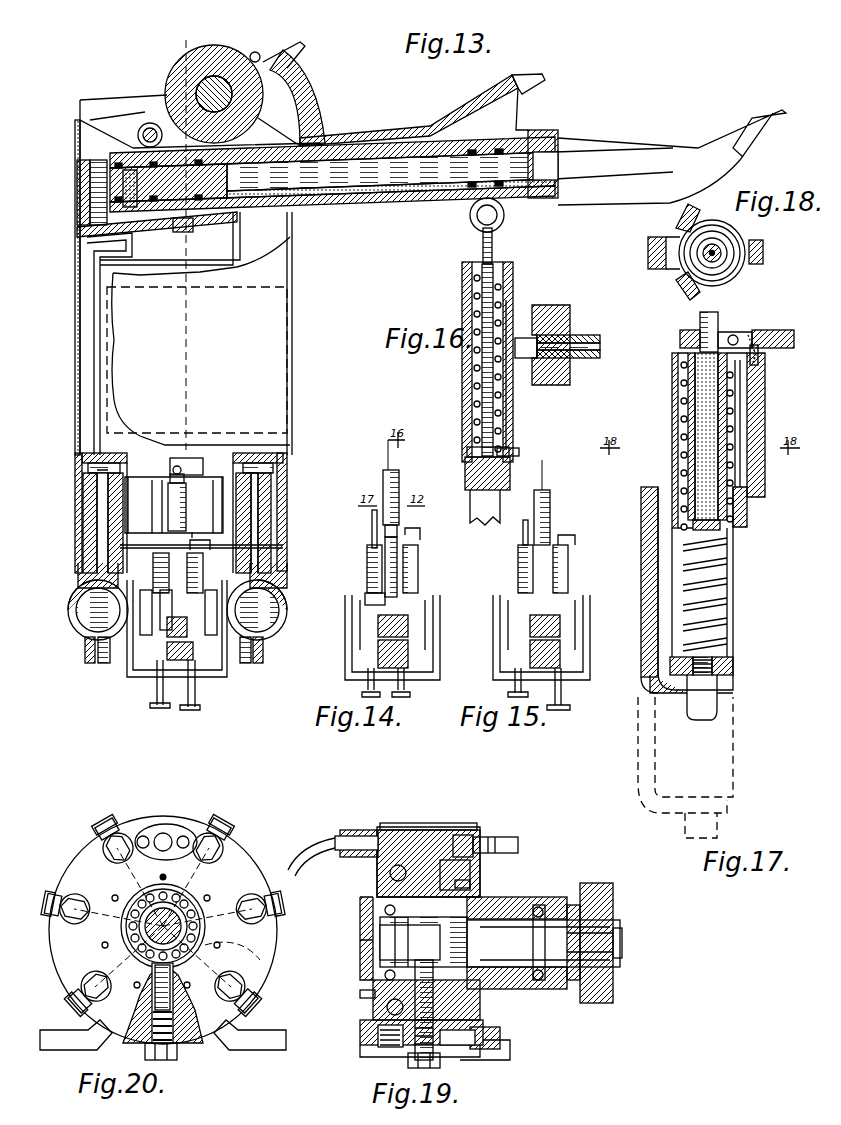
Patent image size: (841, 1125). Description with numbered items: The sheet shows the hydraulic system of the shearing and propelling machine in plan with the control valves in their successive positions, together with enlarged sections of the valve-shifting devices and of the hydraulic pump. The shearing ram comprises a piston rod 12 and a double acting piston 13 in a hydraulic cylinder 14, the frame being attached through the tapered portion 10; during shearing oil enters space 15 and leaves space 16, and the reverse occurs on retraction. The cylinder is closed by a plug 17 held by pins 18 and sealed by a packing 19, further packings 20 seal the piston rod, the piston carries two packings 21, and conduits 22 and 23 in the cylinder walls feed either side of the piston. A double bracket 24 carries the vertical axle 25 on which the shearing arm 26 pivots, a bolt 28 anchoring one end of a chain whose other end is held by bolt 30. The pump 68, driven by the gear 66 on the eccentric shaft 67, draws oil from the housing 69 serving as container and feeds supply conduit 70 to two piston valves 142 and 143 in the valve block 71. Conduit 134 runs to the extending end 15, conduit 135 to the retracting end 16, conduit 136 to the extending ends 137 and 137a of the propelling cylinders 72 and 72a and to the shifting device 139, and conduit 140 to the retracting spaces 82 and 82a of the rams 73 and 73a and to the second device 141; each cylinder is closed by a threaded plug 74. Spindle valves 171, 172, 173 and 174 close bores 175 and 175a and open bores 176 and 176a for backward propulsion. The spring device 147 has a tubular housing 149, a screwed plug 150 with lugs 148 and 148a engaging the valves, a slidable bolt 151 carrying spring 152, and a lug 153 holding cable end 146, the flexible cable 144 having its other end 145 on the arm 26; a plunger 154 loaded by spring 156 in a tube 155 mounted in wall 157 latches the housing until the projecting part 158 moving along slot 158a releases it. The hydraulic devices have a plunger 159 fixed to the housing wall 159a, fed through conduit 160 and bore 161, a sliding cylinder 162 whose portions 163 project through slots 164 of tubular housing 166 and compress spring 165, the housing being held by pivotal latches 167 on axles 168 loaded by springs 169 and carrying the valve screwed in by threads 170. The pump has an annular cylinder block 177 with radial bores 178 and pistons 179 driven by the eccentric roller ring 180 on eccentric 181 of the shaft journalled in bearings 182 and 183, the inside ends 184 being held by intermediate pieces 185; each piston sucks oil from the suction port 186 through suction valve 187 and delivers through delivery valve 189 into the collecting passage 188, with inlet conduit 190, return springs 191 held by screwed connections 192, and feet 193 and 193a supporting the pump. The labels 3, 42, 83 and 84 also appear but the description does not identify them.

In FIG. 13, the arm 3 is at (412, 128).
In FIG. 13, the tapered portion 10 is at (558, 165).
In FIG. 13, the piston rod 12 is at (368, 200).
In FIG. 13, the double acting piston 13 is at (285, 135).
In FIG. 13, the hydraulic cylinder 14 is at (335, 148).
In FIG. 13, the space 15 is at (78, 195).
In FIG. 13, the space 16 is at (370, 158).
In FIG. 13, the plug 17 is at (85, 210).
In FIG. 13, the pins 18 is at (98, 180).
In FIG. 13, the packing 19 is at (110, 236).
In FIG. 13, the packings 20 is at (540, 130).
In FIG. 13, the packings 21 is at (190, 232).
In FIG. 13, the conduit 22 is at (420, 193).
In FIG. 13, the conduit 23 is at (160, 226).
In FIG. 13, the double bracket 24 is at (292, 100).
In FIG. 13, the vertical axle 25 is at (220, 80).
In FIG. 13, the arm 26 is at (178, 82).
In FIG. 13, the bolt 28 is at (145, 124).
In FIG. 13, the bolt 30 is at (290, 42).
In FIG. 13, the bracket 42 is at (82, 122).
In FIG. 19, the gear 66 is at (615, 910).
In FIG. 19, the eccentric shaft 67 is at (618, 942).
In FIG. 13, the hydraulic pump 68 is at (205, 465).
In FIG. 19, the hydraulic pump 68 is at (449, 812).
In FIG. 14, the housing 69 is at (352, 680).
In FIG. 13, the supply conduit 70 is at (165, 628).
In FIG. 14, the supply conduit 70 is at (408, 622).
In FIG. 15, the supply conduit 70 is at (537, 600).
In FIG. 19, the supply conduit 70 is at (300, 860).
In FIG. 13, the valve block 71 is at (165, 660).
In FIG. 14, the valve block 71 is at (392, 670).
In FIG. 13, the hydraulic cylinder 72 is at (275, 578).
In FIG. 13, the hydraulic cylinder 72a is at (85, 578).
In FIG. 13, the ram 73 is at (255, 488).
In FIG. 13, the ram 73a is at (88, 490).
In FIG. 13, the threaded plug 74 is at (88, 455).
In FIG. 13, the space 82 is at (268, 518).
In FIG. 13, the space 82a is at (108, 518).
In FIG. 13, the stem 83 is at (158, 710).
In FIG. 15, the stem 83 is at (510, 693).
In FIG. 13, the stem 84 is at (193, 712).
In FIG. 15, the stem 84 is at (560, 712).
In FIG. 13, the conduit 134 is at (80, 366).
In FIG. 13, the conduit 135 is at (100, 355).
In FIG. 13, the conduit 136 is at (190, 458).
In FIG. 14, the conduit 136 is at (372, 525).
In FIG. 13, the extending end 137 is at (283, 462).
In FIG. 13, the extending end 137a is at (90, 468).
In FIG. 13, the device for automatic shifting of the valve 139 is at (153, 578).
In FIG. 14, the device for automatic shifting of the valve 139 is at (372, 590).
In FIG. 15, the device for automatic shifting of the valve 139 is at (520, 575).
In FIG. 13, the conduit 140 is at (198, 538).
In FIG. 14, the conduit 140 is at (418, 530).
In FIG. 13, the second device for automatic shifting 141 is at (200, 580).
In FIG. 14, the second device for automatic shifting 141 is at (418, 572).
In FIG. 15, the second device for automatic shifting 141 is at (565, 575).
In FIG. 13, the piston valve 142 is at (155, 665).
In FIG. 13, the piston valve 143 is at (210, 640).
In FIG. 17, the piston valve 143 is at (712, 708).
In FIG. 13, the flexible cable 144 is at (184, 322).
In FIG. 13, the cable end 145 is at (188, 78).
In FIG. 13, the cable end 146 is at (172, 465).
In FIG. 16, the cable end 146 is at (475, 228).
In FIG. 13, the spring device 147 is at (180, 503).
In FIG. 16, the spring device 147 is at (513, 282).
In FIG. 14, the spring device 147 is at (392, 485).
In FIG. 15, the spring device 147 is at (547, 520).
In FIG. 16, the extension lug 148 is at (475, 510).
In FIG. 14, the extension lug 148 is at (398, 560).
In FIG. 18, the extension lug 148 is at (652, 253).
In FIG. 17, the extension lug 148 is at (648, 553).
In FIG. 14, the extension lug 148a is at (370, 565).
In FIG. 16, the tubular housing 149 is at (465, 275).
In FIG. 16, the plug 150 is at (500, 475).
In FIG. 16, the slidable bolt 151 is at (490, 425).
In FIG. 16, the spring 152 is at (470, 378).
In FIG. 16, the lug 153 is at (492, 255).
In FIG. 16, the plunger 154 is at (525, 340).
In FIG. 16, the tube 155 is at (585, 335).
In FIG. 16, the spring 156 is at (582, 358).
In FIG. 16, the wall 157 is at (550, 375).
In FIG. 16, the projecting part 158 is at (520, 452).
In FIG. 16, the slot 158a is at (508, 388).
In FIG. 17, the hydraulic plunger 159 is at (682, 343).
In FIG. 17, the machine housing wall 159a is at (790, 330).
In FIG. 17, the conduit 160 is at (714, 330).
In FIG. 17, the bore 161 is at (705, 410).
In FIG. 17, the cylinder 162 is at (690, 458).
In FIG. 17, the projecting portions 163 is at (765, 395).
In FIG. 17, the slots 164 is at (740, 430).
In FIG. 17, the spring 165 is at (737, 592).
In FIG. 18, the tubular housing 166 is at (720, 222).
In FIG. 17, the tubular housing 166 is at (735, 665).
In FIG. 18, the pivotal latches 167 is at (765, 250).
In FIG. 17, the pivotal latches 167 is at (750, 490).
In FIG. 17, the axle 168 is at (740, 338).
In FIG. 17, the spring 169 is at (755, 352).
In FIG. 17, the threads 170 is at (718, 652).
In FIG. 13, the spindle valve 171 is at (88, 660).
In FIG. 13, the spindle valve 172 is at (103, 662).
In FIG. 13, the spindle valve 173 is at (247, 663).
In FIG. 13, the spindle valve 174 is at (260, 663).
In FIG. 13, the bore 175 is at (275, 620).
In FIG. 13, the bore 175a is at (82, 620).
In FIG. 13, the bore 176 is at (282, 605).
In FIG. 13, the bore 176a is at (72, 602).
In FIG. 20, the annular cylinder block 177 is at (90, 855).
In FIG. 19, the annular cylinder block 177 is at (400, 830).
In FIG. 20, the radial bores 178 is at (225, 968).
In FIG. 19, the radial bores 178 is at (470, 873).
In FIG. 20, the pistons 179 is at (245, 1002).
In FIG. 19, the pistons 179 is at (470, 1012).
In FIG. 20, the eccentric roller ring 180 is at (188, 904).
In FIG. 19, the eccentric roller ring 180 is at (440, 975).
In FIG. 20, the eccentric 181 is at (138, 900).
In FIG. 19, the eccentric 181 is at (428, 937).
In FIG. 19, the antifriction bearing 182 is at (365, 905).
In FIG. 19, the antifriction bearing 183 is at (543, 905).
In FIG. 20, the inside ends 184 is at (128, 942).
In FIG. 19, the inside ends 184 is at (487, 990).
In FIG. 20, the intermediate pieces 185 is at (200, 938).
In FIG. 19, the annular suction port 186 is at (465, 838).
In FIG. 19, the suction valve 187 is at (465, 1060).
In FIG. 19, the annular collecting passage 188 is at (390, 873).
In FIG. 19, the delivery valve 189 is at (390, 1045).
In FIG. 19, the inlet conduit 190 is at (500, 845).
In FIG. 20, the spring 191 is at (150, 1030).
In FIG. 19, the spring 191 is at (440, 1060).
In FIG. 20, the screwed connection 192 is at (165, 1060).
In FIG. 19, the screwed connection 192 is at (410, 1063).
In FIG. 20, the foot 193 is at (78, 1045).
In FIG. 20, the foot 193a is at (260, 1047).